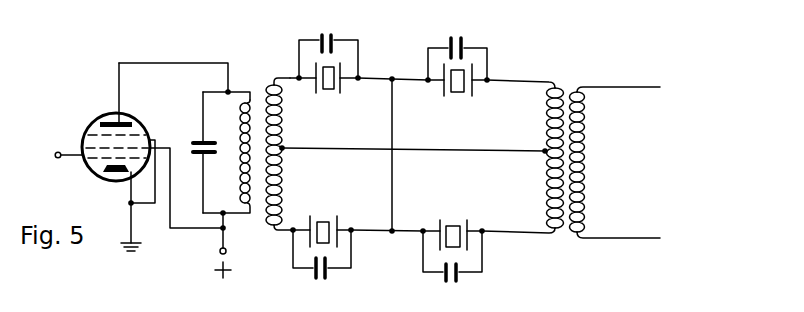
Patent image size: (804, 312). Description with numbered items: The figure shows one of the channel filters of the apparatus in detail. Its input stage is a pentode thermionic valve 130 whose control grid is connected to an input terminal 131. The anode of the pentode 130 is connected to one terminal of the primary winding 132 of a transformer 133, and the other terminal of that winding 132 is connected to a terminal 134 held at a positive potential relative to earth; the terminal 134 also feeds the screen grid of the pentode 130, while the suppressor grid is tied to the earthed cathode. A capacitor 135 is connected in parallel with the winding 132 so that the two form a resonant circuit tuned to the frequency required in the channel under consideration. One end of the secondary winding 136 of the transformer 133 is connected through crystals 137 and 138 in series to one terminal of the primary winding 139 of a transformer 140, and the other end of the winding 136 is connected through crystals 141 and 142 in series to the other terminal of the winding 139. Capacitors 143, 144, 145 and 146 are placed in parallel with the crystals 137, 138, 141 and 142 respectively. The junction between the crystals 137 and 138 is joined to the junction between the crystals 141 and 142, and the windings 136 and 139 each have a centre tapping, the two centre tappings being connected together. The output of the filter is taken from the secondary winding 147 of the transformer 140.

The pentode thermionic valve 130 is at (94, 122).
The input terminal 131 is at (52, 155).
The primary winding 132 is at (226, 154).
The transformer 133 is at (358, 141).
The terminal 134 is at (235, 245).
The capacitor 135 is at (193, 152).
The secondary winding 136 is at (405, 154).
The crystal 137 is at (328, 91).
The crystal 138 is at (457, 93).
The primary winding 139 is at (523, 156).
The transformer 140 is at (571, 146).
The crystal 141 is at (322, 220).
The crystal 142 is at (452, 222).
The capacitor 143 is at (328, 43).
The capacitor 144 is at (457, 45).
The capacitor 145 is at (322, 269).
The capacitor 146 is at (452, 270).
The secondary winding 147 is at (557, 78).